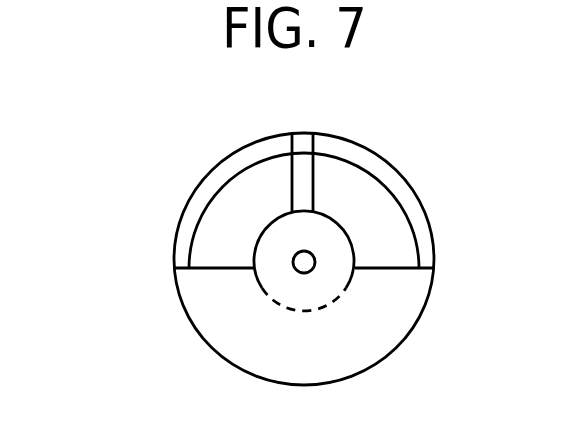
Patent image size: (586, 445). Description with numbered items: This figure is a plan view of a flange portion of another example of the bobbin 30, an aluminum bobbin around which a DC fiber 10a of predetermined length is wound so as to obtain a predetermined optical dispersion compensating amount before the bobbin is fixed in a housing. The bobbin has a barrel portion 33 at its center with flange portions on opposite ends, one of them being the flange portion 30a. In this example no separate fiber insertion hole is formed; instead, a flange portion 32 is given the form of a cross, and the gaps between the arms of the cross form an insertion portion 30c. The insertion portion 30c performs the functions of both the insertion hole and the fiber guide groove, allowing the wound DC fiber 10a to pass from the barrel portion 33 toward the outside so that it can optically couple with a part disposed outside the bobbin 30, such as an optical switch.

The bobbin 30 is at (422, 165).
The DC fiber 10a is at (239, 193).
The insertion portion 30c is at (218, 231).
The flange portion 30a is at (196, 310).
The flange portion 32 is at (316, 180).
The barrel portion 33 is at (340, 293).